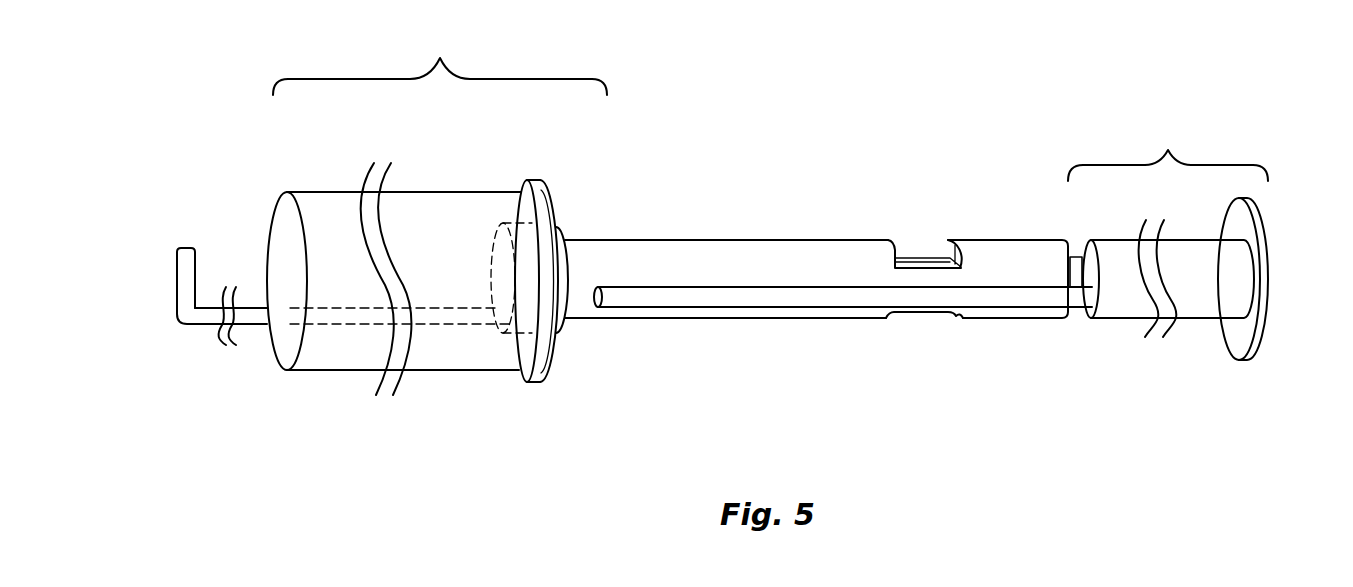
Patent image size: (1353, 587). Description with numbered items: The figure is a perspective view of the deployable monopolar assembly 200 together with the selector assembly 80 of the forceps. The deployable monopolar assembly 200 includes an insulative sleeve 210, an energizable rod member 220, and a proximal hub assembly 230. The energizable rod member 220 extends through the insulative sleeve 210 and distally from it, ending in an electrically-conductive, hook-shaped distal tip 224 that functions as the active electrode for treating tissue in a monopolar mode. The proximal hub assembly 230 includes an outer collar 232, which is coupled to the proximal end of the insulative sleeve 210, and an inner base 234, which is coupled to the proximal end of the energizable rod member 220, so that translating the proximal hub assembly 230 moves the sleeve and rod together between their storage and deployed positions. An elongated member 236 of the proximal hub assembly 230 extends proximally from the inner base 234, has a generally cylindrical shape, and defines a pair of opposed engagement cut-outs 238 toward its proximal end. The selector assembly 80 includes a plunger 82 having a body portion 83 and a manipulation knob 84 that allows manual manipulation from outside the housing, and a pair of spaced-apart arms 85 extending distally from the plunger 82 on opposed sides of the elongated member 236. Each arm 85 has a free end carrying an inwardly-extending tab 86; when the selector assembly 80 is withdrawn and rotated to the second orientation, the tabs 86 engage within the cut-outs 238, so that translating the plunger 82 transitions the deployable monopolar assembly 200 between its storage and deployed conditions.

The deployable monopolar assembly 200 is at (440, 63).
The insulative sleeve 210 is at (430, 372).
The energizable rod member 220 is at (263, 327).
The distal tip 224 is at (177, 268).
The proximal hub assembly 230 is at (538, 399).
The outer collar 232 is at (537, 178).
The inner base 234 is at (502, 226).
The elongated member 236 is at (743, 256).
The engagement cut-outs 238 is at (927, 265).
The selector assembly 80 is at (1168, 152).
The plunger 82 is at (1121, 320).
The body portion 83 is at (1225, 293).
The manipulation knob 84 is at (1249, 362).
The arms 85 is at (790, 297).
The tab 86 is at (594, 300).